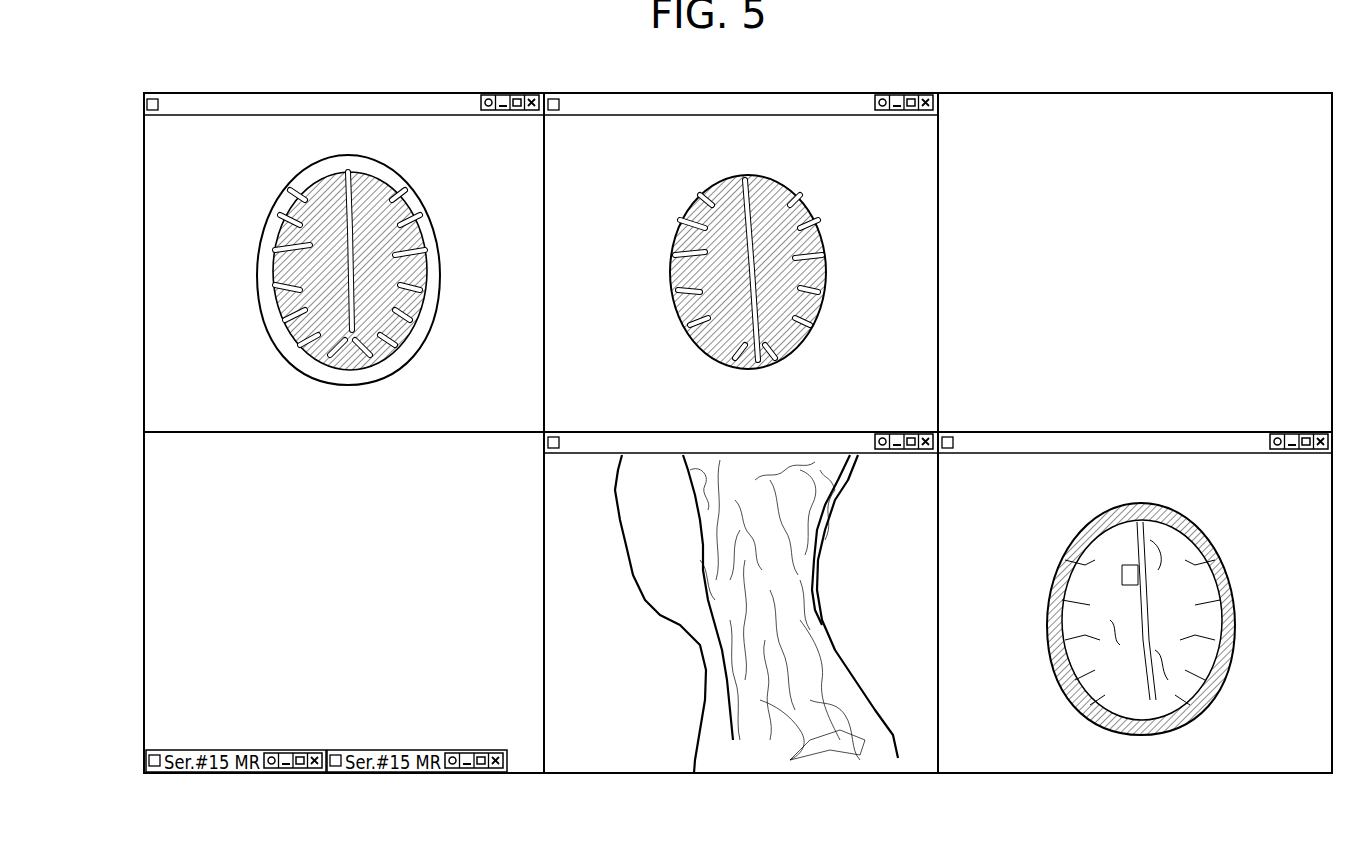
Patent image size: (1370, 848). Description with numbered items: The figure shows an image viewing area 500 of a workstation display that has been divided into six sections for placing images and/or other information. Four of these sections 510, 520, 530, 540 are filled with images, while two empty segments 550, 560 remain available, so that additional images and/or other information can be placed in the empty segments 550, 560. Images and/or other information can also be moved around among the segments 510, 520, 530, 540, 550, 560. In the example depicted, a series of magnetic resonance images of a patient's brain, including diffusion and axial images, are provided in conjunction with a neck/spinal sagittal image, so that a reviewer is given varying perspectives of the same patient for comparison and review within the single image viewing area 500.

The image viewing area 500 is at (413, 43).
The section 510 is at (462, 125).
The section 520 is at (860, 125).
The section 530 is at (633, 750).
The section 540 is at (1208, 748).
The empty segment 550 is at (515, 745).
The empty segment 560 is at (1130, 125).